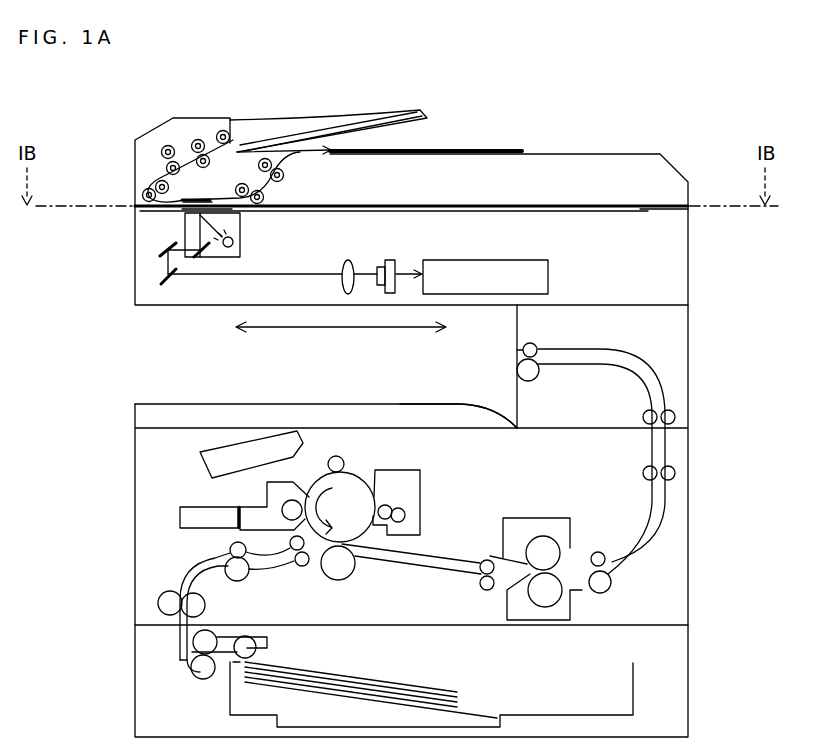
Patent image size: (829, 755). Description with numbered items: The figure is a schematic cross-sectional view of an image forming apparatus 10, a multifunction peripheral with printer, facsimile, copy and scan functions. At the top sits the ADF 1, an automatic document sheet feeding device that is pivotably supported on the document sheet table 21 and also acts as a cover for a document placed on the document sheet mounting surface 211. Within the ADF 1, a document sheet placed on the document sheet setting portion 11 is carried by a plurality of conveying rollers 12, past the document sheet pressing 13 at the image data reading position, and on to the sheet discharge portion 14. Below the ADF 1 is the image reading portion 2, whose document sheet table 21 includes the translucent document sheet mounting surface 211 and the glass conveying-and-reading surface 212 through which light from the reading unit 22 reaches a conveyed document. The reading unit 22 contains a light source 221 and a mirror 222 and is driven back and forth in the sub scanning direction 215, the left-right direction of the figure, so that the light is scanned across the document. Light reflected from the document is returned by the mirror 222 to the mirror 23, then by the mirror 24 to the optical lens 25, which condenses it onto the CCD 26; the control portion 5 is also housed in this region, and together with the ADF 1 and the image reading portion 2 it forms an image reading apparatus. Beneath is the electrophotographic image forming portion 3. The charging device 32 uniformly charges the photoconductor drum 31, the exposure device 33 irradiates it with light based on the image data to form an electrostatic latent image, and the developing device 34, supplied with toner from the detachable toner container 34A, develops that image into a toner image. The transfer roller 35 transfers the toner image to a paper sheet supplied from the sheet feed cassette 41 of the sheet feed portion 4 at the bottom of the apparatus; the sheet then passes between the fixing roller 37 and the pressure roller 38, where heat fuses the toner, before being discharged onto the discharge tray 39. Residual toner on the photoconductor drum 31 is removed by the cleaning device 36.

The image forming apparatus 10 is at (92, 133).
The ADF 1 is at (135, 158).
The document sheet setting portion 11 is at (272, 124).
The conveying rollers 12 is at (168, 150).
The document sheet pressing 13 is at (188, 201).
The sheet discharge portion 14 is at (536, 153).
The image reading portion 2 is at (135, 264).
The document sheet table 21 is at (658, 208).
The document sheet mounting surface 211 is at (550, 211).
The conveying-and-reading surface 212 is at (183, 212).
The sub scanning direction 215 is at (335, 328).
The reading unit 22 is at (242, 243).
The light source 221 is at (248, 236).
The mirror 222 is at (207, 257).
The mirror 23 is at (162, 246).
The mirror 24 is at (163, 284).
The optical lens 25 is at (350, 260).
The CCD 26 is at (395, 260).
The control portion 5 is at (490, 260).
The image forming portion 3 is at (153, 446).
The photoconductor drum 31 is at (358, 475).
The charging device 32 is at (328, 463).
The exposure device 33 is at (200, 470).
The developing device 34 is at (267, 487).
The toner container 34A is at (192, 532).
The transfer roller 35 is at (347, 580).
The cleaning device 36 is at (403, 468).
The fixing roller 37 is at (572, 540).
The pressure roller 38 is at (527, 604).
The discharge tray 39 is at (443, 404).
The sheet feed portion 4 is at (135, 688).
The sheet feed cassette 41 is at (230, 697).